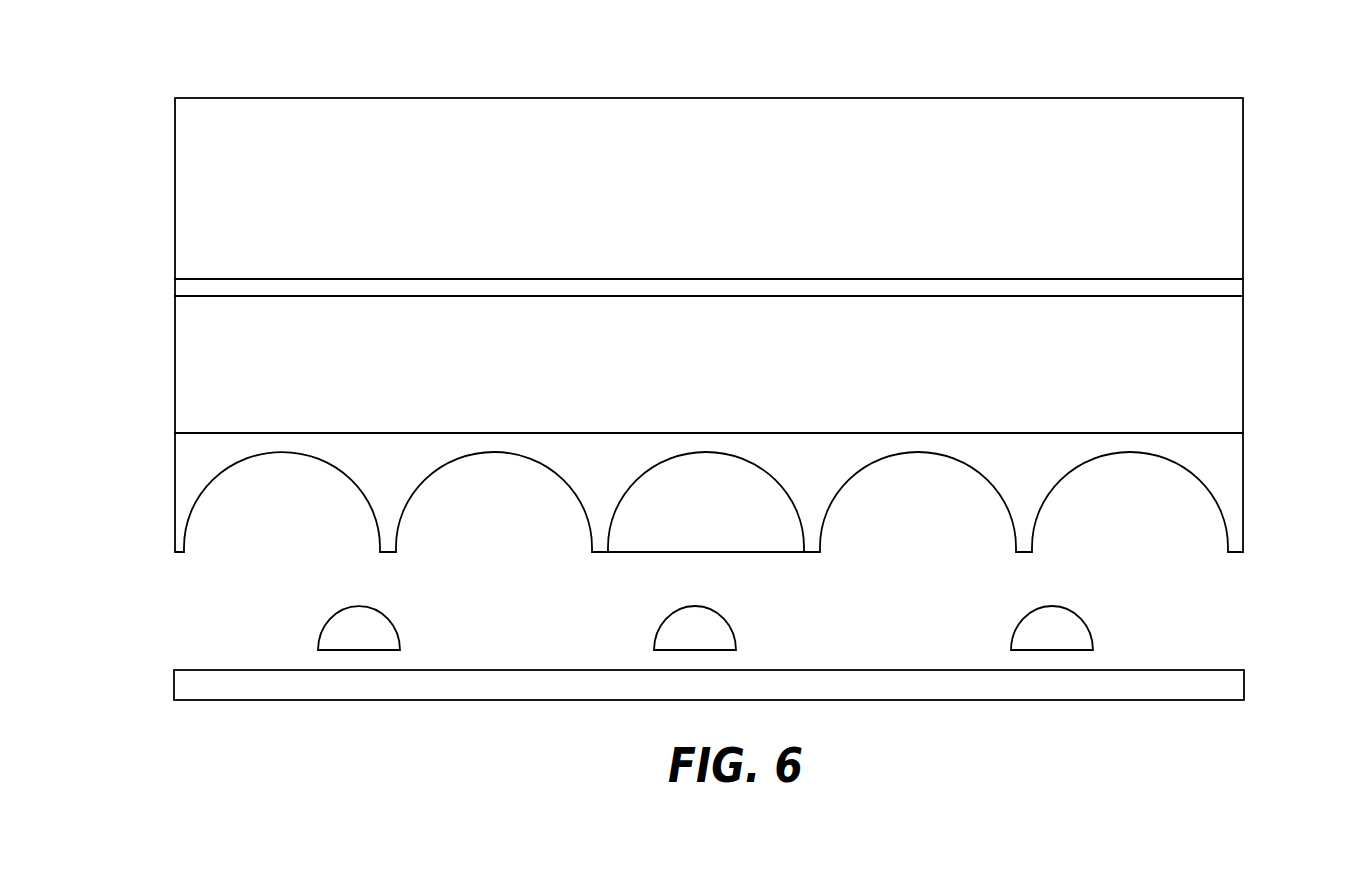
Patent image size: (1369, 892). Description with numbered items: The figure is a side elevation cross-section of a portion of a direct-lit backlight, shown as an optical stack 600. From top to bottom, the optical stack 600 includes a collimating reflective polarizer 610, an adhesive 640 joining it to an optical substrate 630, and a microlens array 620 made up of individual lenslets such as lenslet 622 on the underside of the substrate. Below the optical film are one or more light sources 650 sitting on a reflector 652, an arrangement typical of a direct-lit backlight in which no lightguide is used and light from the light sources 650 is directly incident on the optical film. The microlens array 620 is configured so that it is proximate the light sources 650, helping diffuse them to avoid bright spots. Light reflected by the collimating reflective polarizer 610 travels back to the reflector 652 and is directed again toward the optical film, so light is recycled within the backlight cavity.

The optical stack 600 is at (104, 156).
The collimating reflective polarizer 610 is at (1243, 200).
The adhesive 640 is at (1243, 288).
The optical substrate 630 is at (1243, 360).
The microlens array 620 is at (764, 492).
The lenslet 622 is at (728, 455).
The light sources 650 is at (330, 621).
The reflector 652 is at (1244, 688).